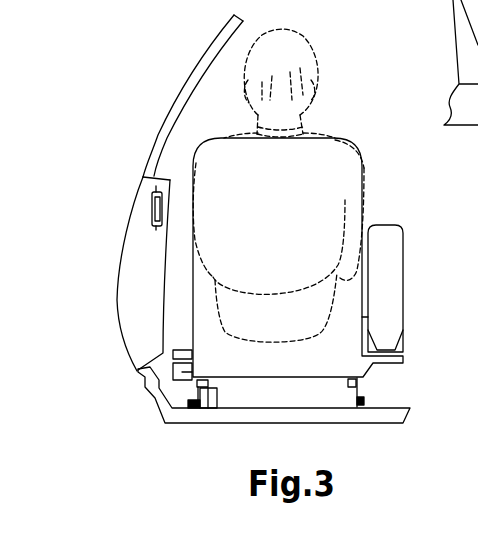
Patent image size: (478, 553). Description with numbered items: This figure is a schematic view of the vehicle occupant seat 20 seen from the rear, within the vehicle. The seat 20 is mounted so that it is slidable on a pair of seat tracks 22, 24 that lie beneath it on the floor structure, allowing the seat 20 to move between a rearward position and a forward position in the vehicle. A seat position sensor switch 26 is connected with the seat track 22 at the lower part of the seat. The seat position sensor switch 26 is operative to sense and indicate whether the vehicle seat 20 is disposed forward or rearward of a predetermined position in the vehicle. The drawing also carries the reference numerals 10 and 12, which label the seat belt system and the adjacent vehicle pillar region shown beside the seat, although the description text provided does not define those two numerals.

The seat belt system 10 is at (152, 202).
The vehicle door pillar 12 is at (112, 256).
The vehicle occupant seat 20 is at (190, 327).
The seat track 22 is at (208, 383).
The seat track 24 is at (365, 402).
The seat position sensor switch 26 is at (217, 398).